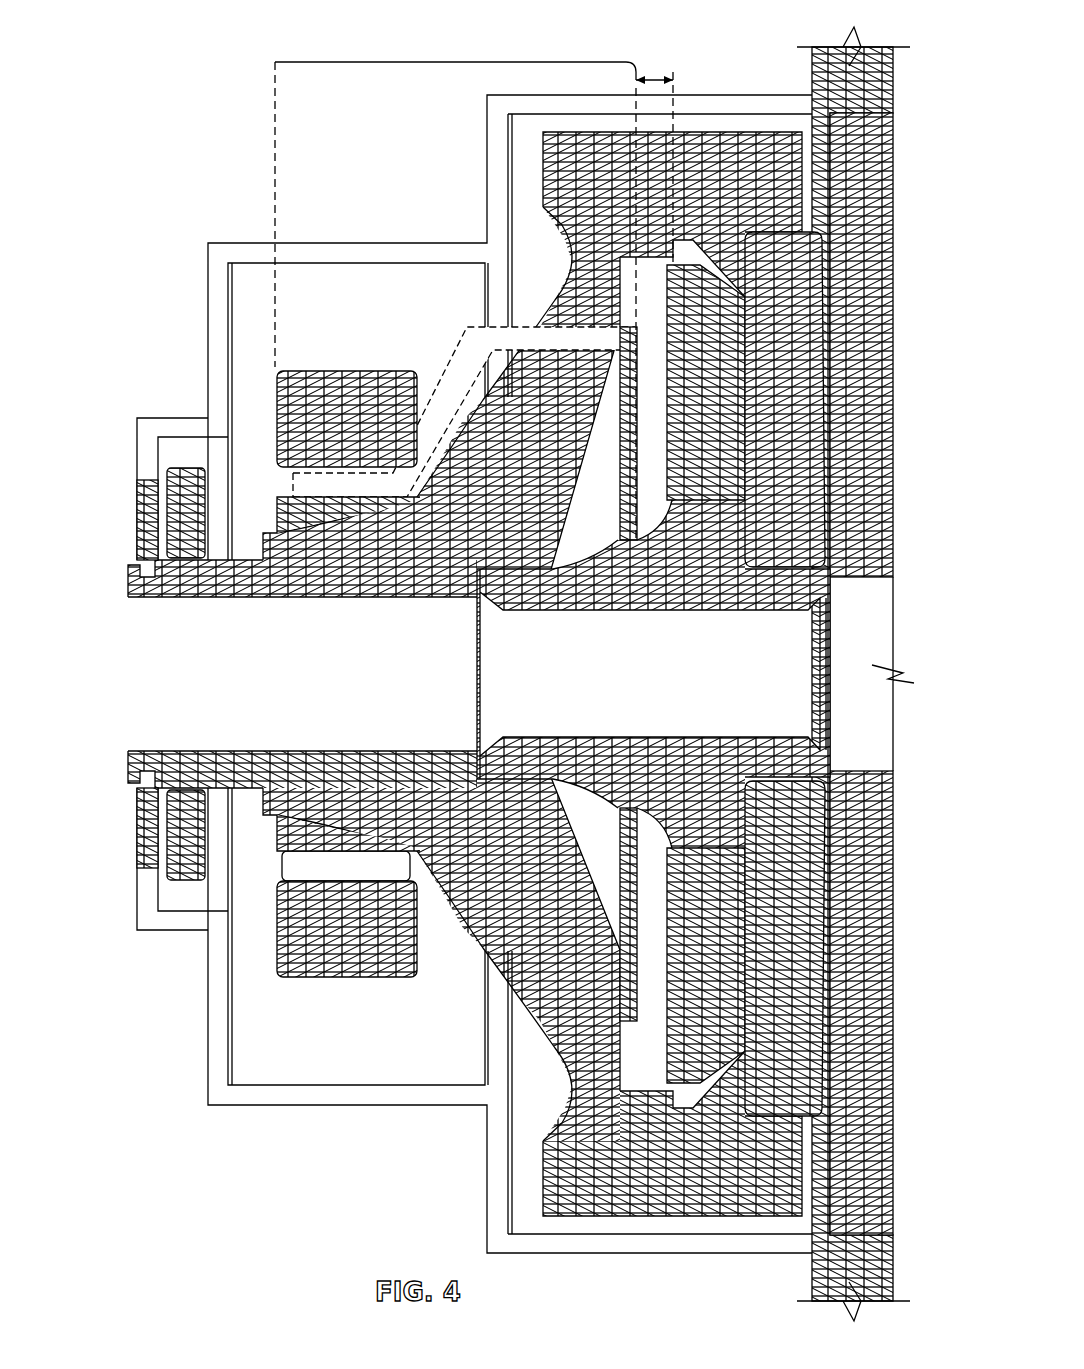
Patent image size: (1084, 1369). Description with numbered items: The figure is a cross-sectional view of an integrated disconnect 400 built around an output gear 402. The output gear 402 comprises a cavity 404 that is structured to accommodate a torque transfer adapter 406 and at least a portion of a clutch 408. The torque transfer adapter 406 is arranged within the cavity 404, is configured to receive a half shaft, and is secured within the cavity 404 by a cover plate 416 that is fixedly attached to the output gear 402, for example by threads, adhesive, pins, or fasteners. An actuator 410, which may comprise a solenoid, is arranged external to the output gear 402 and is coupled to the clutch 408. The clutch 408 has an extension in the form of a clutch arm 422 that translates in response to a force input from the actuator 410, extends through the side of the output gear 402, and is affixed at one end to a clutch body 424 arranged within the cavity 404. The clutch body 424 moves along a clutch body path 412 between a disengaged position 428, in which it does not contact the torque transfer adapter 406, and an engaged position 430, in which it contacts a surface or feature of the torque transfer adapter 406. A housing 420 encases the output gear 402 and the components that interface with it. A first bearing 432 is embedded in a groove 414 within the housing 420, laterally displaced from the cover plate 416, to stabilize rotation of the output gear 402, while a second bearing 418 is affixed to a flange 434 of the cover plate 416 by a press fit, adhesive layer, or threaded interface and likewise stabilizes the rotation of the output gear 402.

The integrated disconnect 400 is at (503, 666).
The output gear 402 is at (730, 147).
The cavity 404 is at (590, 822).
The torque transfer adapter 406 is at (707, 969).
The clutch 408 is at (455, 195).
The actuator 410 is at (270, 416).
The clutch body path 412 is at (652, 72).
The groove 414 is at (182, 906).
The cover plate 416 is at (790, 1009).
The second bearing 418 is at (858, 540).
The housing 420 is at (234, 256).
The clutch arm 422 is at (440, 400).
The clutch body 424 is at (442, 412).
The disengaged position 428 is at (636, 176).
The engaged position 430 is at (673, 240).
The first bearing 432 is at (167, 518).
The flange 434 is at (800, 555).